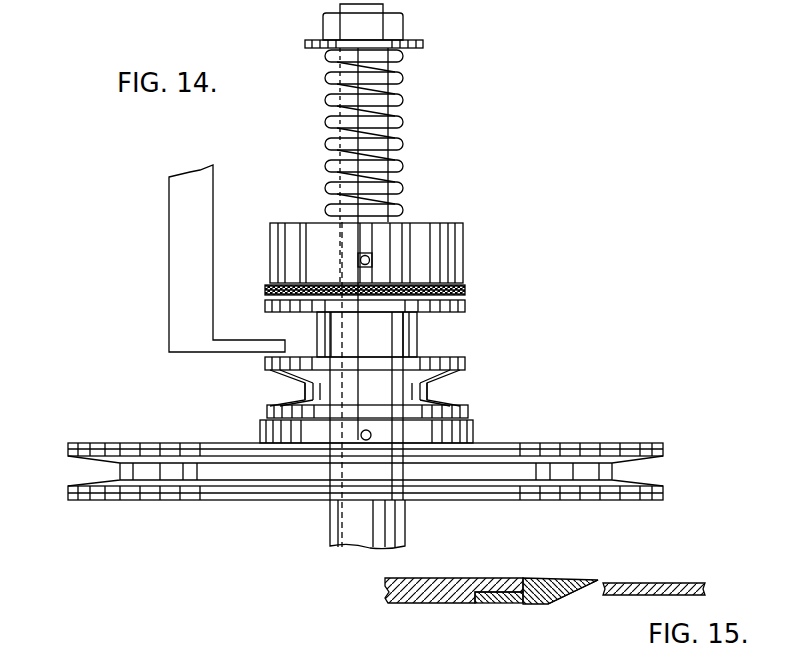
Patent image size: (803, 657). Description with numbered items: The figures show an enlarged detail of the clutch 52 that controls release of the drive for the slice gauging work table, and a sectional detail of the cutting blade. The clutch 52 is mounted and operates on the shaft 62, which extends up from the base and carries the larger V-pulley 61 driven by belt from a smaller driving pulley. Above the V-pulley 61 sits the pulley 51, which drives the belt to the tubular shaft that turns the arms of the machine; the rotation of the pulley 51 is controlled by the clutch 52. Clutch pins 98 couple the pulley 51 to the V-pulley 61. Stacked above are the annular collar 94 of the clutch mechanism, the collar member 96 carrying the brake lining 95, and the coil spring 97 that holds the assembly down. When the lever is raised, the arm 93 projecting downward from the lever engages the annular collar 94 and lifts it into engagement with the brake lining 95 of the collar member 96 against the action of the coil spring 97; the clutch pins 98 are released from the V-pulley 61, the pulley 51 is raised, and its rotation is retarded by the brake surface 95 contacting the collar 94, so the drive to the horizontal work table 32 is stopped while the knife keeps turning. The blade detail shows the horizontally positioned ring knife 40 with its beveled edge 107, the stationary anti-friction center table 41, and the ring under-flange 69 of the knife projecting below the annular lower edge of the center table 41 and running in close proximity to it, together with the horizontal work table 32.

In FIG. 14, the coil spring 97 is at (403, 118).
In FIG. 14, the clutch 52 is at (413, 183).
In FIG. 14, the collar member 96 is at (423, 236).
In FIG. 14, the brake lining 95 is at (458, 262).
In FIG. 14, the annular collar 94 is at (450, 332).
In FIG. 14, the pulley 51 is at (468, 360).
In FIG. 14, the clutch pins 98 is at (258, 425).
In FIG. 14, the V-pulley 61 is at (637, 443).
In FIG. 14, the shaft 62 is at (350, 520).
In FIG. 14, the arm 93 is at (215, 195).
In FIG. 15, the anti-friction center table 41 is at (475, 578).
In FIG. 15, the ring under-flange 69 is at (490, 604).
In FIG. 15, the ring knife 40 is at (553, 578).
In FIG. 15, the beveled edge 107 is at (583, 593).
In FIG. 15, the horizontal work table 32 is at (645, 584).